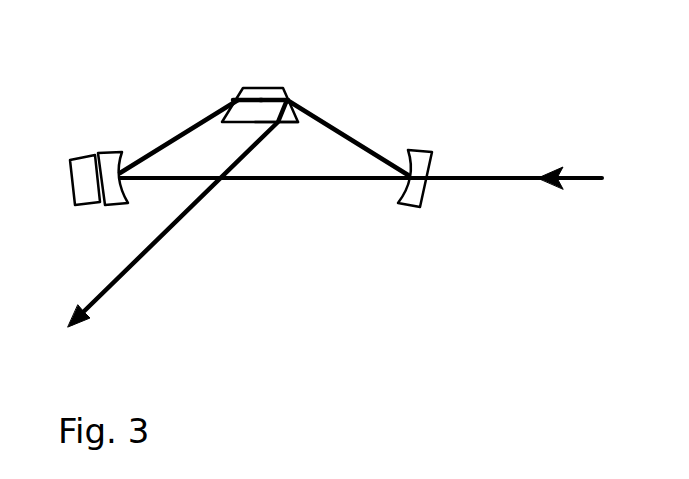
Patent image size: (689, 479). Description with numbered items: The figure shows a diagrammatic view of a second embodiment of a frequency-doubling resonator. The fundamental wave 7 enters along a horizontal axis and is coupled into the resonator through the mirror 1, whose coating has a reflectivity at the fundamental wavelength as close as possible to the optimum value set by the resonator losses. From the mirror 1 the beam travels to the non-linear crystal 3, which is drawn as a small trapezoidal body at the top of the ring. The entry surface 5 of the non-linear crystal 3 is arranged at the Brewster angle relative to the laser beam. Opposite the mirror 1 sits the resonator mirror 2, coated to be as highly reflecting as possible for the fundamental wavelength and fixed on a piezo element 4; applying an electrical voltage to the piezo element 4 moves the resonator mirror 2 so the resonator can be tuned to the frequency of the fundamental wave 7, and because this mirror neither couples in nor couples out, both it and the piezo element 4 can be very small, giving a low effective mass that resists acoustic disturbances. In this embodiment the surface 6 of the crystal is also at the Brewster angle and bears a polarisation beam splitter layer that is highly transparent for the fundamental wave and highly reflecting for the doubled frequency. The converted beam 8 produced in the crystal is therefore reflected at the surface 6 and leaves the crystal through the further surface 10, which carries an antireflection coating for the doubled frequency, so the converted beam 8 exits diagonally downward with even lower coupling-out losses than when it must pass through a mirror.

The mirror 1 is at (423, 160).
The resonator mirror 2 is at (110, 163).
The non-linear crystal 3 is at (287, 70).
The piezo element 4 is at (84, 163).
The entry surface 5 is at (240, 97).
The surface 6 is at (287, 98).
The fundamental wave 7 is at (573, 173).
The converted beam 8 is at (176, 224).
The further surface 10 is at (290, 123).